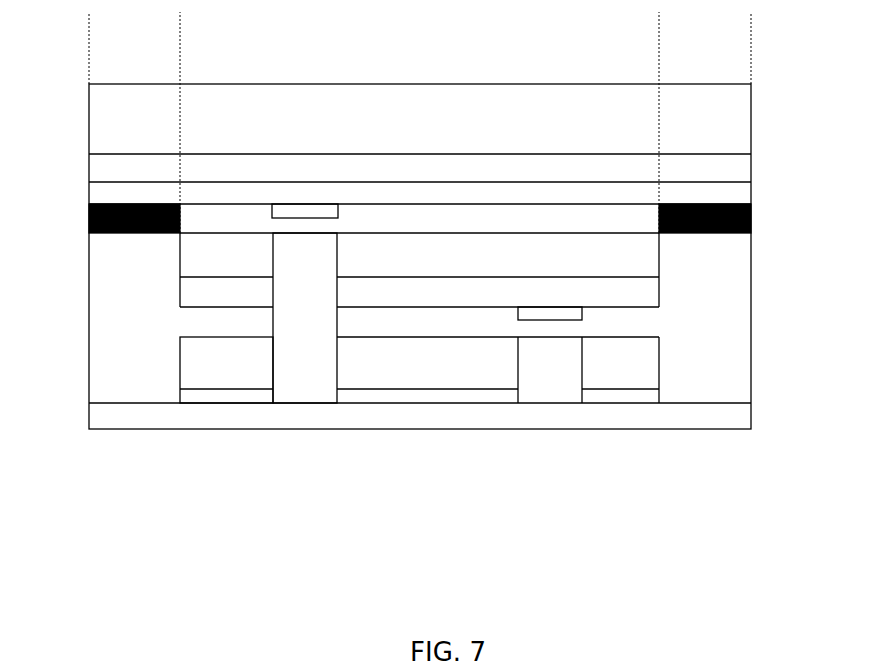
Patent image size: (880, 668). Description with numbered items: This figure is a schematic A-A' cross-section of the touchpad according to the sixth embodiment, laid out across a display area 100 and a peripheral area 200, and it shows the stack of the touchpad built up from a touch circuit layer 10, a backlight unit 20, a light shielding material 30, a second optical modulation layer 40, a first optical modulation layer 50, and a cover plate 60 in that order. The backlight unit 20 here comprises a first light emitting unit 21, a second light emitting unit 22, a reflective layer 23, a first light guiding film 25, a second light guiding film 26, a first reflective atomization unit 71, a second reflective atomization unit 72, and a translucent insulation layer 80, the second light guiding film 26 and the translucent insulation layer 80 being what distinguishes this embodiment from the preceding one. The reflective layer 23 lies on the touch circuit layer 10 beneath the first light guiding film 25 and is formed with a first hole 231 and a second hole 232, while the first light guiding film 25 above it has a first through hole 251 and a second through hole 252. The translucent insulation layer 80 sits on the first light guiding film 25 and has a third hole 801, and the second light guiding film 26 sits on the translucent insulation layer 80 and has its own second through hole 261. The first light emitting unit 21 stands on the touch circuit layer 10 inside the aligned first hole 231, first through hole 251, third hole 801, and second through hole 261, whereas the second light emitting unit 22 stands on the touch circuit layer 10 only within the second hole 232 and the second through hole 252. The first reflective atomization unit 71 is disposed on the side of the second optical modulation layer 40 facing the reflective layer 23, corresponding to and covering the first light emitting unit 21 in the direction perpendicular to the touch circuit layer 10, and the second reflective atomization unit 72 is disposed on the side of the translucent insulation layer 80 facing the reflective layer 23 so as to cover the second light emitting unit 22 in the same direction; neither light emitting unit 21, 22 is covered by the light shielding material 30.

The touch circuit layer 10 is at (752, 419).
The backlight unit 20 is at (752, 340).
The first light emitting unit 21 is at (319, 338).
The second light emitting unit 22 is at (563, 383).
The reflective layer 23 is at (178, 398).
The first light guiding film 25 is at (178, 365).
The second light guiding film 26 is at (661, 253).
The light shielding material 30 is at (752, 215).
The second optical modulation layer 40 is at (88, 190).
The first optical modulation layer 50 is at (752, 168).
The cover plate 60 is at (88, 129).
The first reflective atomization unit 71 is at (305, 204).
The second reflective atomization unit 72 is at (550, 307).
The translucent insulation layer 80 is at (661, 289).
The display area 100 is at (180, 13).
The peripheral area 200 is at (89, 62).
The first hole 231 is at (266, 397).
The second hole 232 is at (510, 394).
The first through hole 251 is at (266, 357).
The second through hole 252 is at (589, 374).
The second through hole 261 is at (346, 261).
The third hole 801 is at (346, 296).